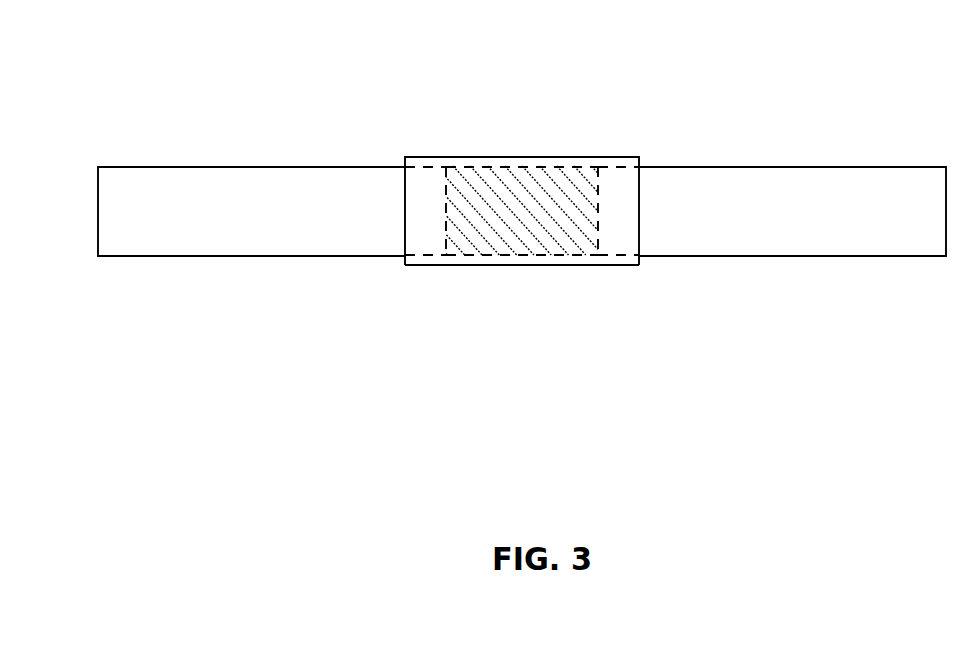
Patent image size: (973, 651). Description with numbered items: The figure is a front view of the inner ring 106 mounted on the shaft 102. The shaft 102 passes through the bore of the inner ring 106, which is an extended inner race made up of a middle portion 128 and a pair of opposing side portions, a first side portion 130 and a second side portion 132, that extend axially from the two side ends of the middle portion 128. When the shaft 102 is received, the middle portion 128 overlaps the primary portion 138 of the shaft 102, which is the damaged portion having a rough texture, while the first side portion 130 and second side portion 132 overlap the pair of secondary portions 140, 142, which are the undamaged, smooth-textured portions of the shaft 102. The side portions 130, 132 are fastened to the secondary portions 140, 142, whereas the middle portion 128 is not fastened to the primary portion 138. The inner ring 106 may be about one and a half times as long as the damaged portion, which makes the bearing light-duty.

The shaft 102 is at (502, 174).
The inner ring 106 is at (553, 126).
The middle portion 128 is at (522, 314).
The first side portion 130 is at (384, 107).
The second side portion 132 is at (657, 115).
The primary portion 138 is at (507, 269).
The secondary portion 140 is at (389, 298).
The secondary portion 142 is at (655, 303).